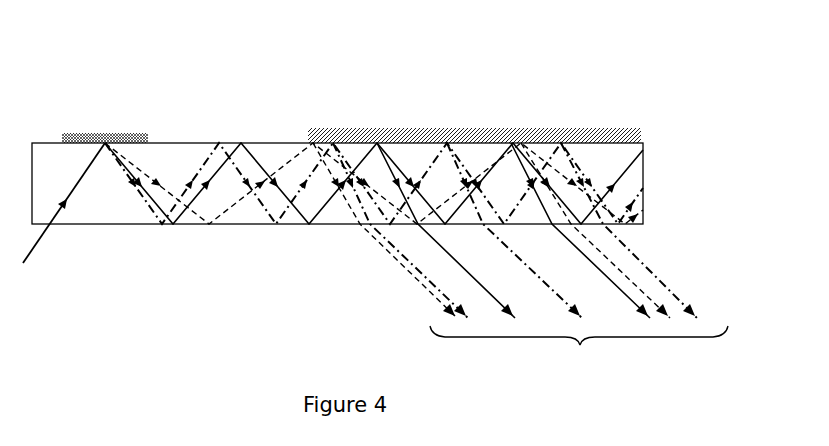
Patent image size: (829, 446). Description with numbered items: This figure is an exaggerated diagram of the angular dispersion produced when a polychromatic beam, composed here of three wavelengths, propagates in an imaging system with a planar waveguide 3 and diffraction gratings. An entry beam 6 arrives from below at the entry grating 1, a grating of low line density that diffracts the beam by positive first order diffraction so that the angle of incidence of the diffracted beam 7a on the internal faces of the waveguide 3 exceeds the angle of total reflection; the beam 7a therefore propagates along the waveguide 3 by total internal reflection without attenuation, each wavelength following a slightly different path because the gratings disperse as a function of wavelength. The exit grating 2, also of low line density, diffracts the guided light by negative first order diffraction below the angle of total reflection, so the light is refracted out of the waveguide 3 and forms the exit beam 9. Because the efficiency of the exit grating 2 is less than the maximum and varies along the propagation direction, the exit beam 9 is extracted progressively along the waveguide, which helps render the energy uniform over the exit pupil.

The entry grating 1 is at (105, 133).
The exit grating 2 is at (307, 133).
The waveguide 3 is at (32, 183).
The entry beam 6 is at (47, 233).
The diffracted beam 7a is at (142, 196).
The exit beam 9 is at (520, 255).